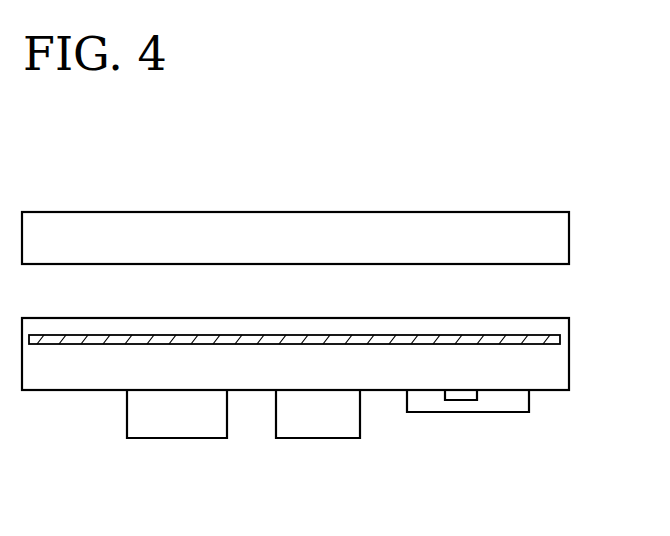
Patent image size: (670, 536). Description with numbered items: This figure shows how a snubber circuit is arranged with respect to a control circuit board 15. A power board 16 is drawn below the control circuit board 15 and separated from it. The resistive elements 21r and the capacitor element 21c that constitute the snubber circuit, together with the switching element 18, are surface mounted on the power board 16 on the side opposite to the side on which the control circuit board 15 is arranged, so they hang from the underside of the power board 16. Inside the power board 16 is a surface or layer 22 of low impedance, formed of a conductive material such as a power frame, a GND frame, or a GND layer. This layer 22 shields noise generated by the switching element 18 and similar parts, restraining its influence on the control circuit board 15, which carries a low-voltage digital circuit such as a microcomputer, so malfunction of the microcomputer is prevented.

The control circuit board 15 is at (569, 240).
The power board 16 is at (555, 367).
The surface (layer) having low impedance 22 is at (527, 333).
The switching element 18 is at (293, 432).
The capacitor element 21c is at (507, 401).
The resistive elements 21r is at (464, 400).